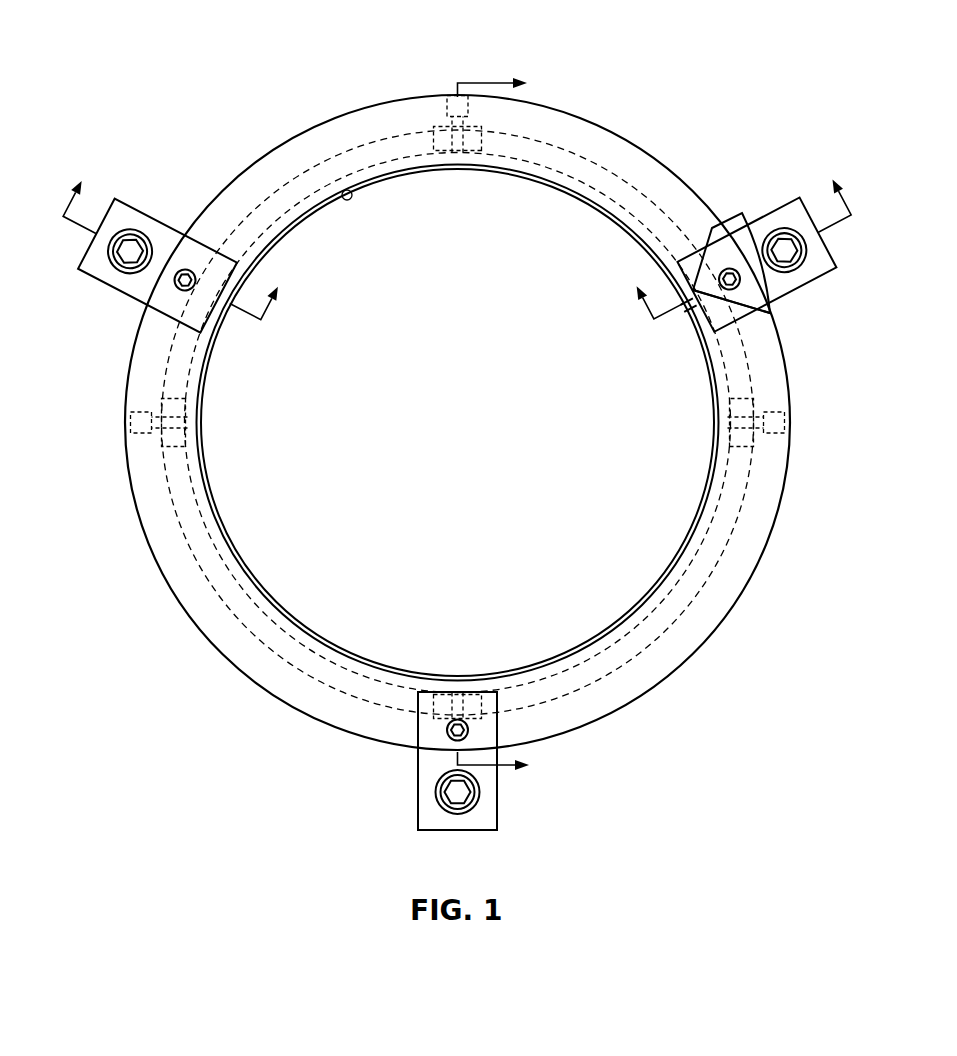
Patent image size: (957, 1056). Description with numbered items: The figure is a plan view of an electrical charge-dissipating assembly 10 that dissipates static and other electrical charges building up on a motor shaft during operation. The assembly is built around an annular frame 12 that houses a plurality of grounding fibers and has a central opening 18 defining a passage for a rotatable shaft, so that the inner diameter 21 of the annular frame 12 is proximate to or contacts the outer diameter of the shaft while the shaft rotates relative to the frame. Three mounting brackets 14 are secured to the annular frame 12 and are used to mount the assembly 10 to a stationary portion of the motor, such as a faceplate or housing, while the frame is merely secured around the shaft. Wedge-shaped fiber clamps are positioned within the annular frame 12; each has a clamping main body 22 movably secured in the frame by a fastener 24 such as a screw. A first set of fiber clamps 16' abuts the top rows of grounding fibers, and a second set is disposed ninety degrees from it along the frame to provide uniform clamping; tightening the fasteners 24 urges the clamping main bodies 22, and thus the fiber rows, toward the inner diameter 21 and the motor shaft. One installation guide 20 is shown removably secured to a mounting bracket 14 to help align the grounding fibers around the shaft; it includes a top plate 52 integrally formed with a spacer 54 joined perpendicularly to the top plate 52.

The electrical charge-dissipating assembly 10 is at (172, 47).
The annular frame 12 is at (617, 152).
The mounting bracket 14 is at (485, 805).
The first set of fiber clamps 16' is at (461, 453).
The central opening 18 is at (300, 583).
The installation guide 20 is at (737, 223).
The inner diameter 21 is at (348, 187).
The clamping main body 22 is at (162, 383).
The fastener 24 is at (444, 106).
The top plate 52 is at (787, 306).
The spacer 54 is at (690, 305).